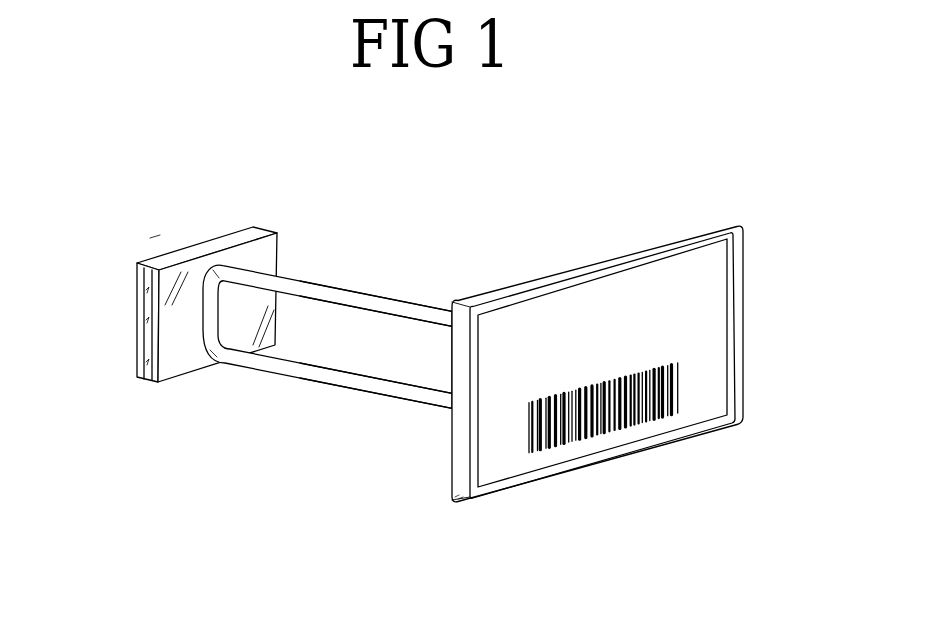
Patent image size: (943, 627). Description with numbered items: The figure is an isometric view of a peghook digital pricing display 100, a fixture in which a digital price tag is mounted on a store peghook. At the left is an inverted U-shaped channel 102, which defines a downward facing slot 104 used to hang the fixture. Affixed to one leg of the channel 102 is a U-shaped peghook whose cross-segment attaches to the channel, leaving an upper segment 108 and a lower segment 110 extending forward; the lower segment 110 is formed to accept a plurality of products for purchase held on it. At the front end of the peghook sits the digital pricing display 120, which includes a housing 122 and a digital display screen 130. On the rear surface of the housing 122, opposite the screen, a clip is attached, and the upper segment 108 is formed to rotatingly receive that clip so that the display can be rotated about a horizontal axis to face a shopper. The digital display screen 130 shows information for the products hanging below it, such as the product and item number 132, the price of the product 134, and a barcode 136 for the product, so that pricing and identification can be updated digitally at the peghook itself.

The peghook digital pricing display 100 is at (92, 156).
The inverted U-shaped channel 102 is at (137, 317).
The downward facing slot 104 is at (147, 379).
The upper segment 108 is at (348, 292).
The lower segment 110 is at (307, 381).
The digital pricing display 120 is at (507, 508).
The housing 122 is at (448, 472).
The digital display screen 130 is at (712, 252).
The product and item number 132 is at (528, 325).
The price of the product 134 is at (713, 313).
The barcode 136 is at (675, 388).